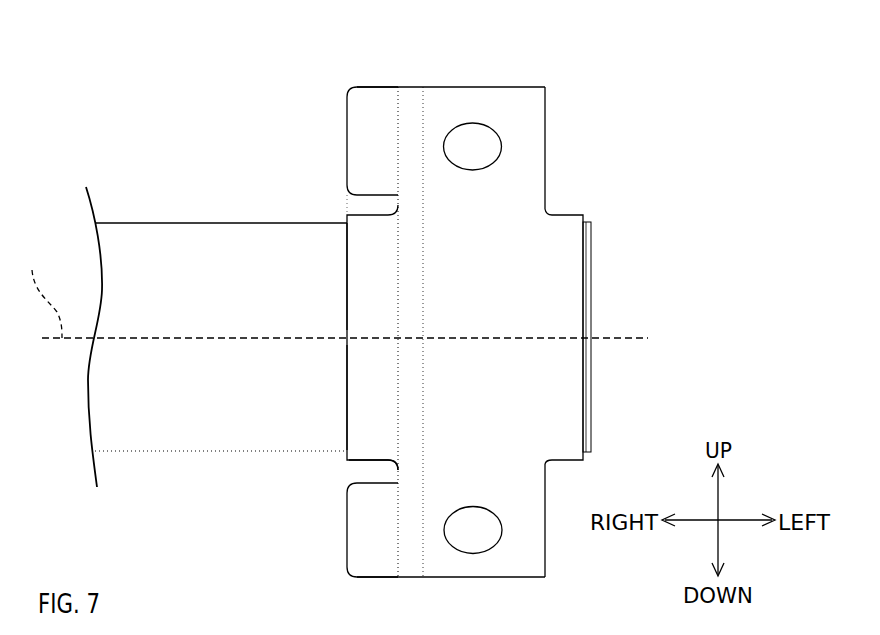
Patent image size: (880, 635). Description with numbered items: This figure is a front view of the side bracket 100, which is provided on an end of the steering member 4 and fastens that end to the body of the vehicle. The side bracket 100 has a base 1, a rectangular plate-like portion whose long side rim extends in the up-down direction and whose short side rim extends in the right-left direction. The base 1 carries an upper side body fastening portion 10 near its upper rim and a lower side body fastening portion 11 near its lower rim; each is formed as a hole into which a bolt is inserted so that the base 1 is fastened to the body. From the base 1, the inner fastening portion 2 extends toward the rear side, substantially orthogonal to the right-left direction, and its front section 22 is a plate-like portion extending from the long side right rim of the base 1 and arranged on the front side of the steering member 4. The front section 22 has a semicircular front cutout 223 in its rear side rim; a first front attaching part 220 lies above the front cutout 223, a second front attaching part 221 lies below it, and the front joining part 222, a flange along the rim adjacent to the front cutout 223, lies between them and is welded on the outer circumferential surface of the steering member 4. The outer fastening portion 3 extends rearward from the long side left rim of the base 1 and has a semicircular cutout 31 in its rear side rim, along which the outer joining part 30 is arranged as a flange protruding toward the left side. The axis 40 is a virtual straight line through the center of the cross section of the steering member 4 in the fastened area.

The base 1 is at (463, 107).
The inner fastening portion 2 is at (320, 110).
The outer fastening portion 3 is at (534, 131).
The steering member 4 is at (153, 250).
The upper side body fastening portion 10 is at (463, 152).
The lower side body fastening portion 11 is at (473, 525).
The front section 22 is at (390, 420).
The outer joining part 30 is at (572, 225).
The cutout 31 is at (599, 380).
The axis 40 is at (41, 291).
The side bracket 100 is at (584, 48).
The first front attaching part 220 is at (360, 153).
The second front attaching part 221 is at (355, 560).
The front joining part 222 is at (360, 288).
The front cutout 223 is at (338, 402).